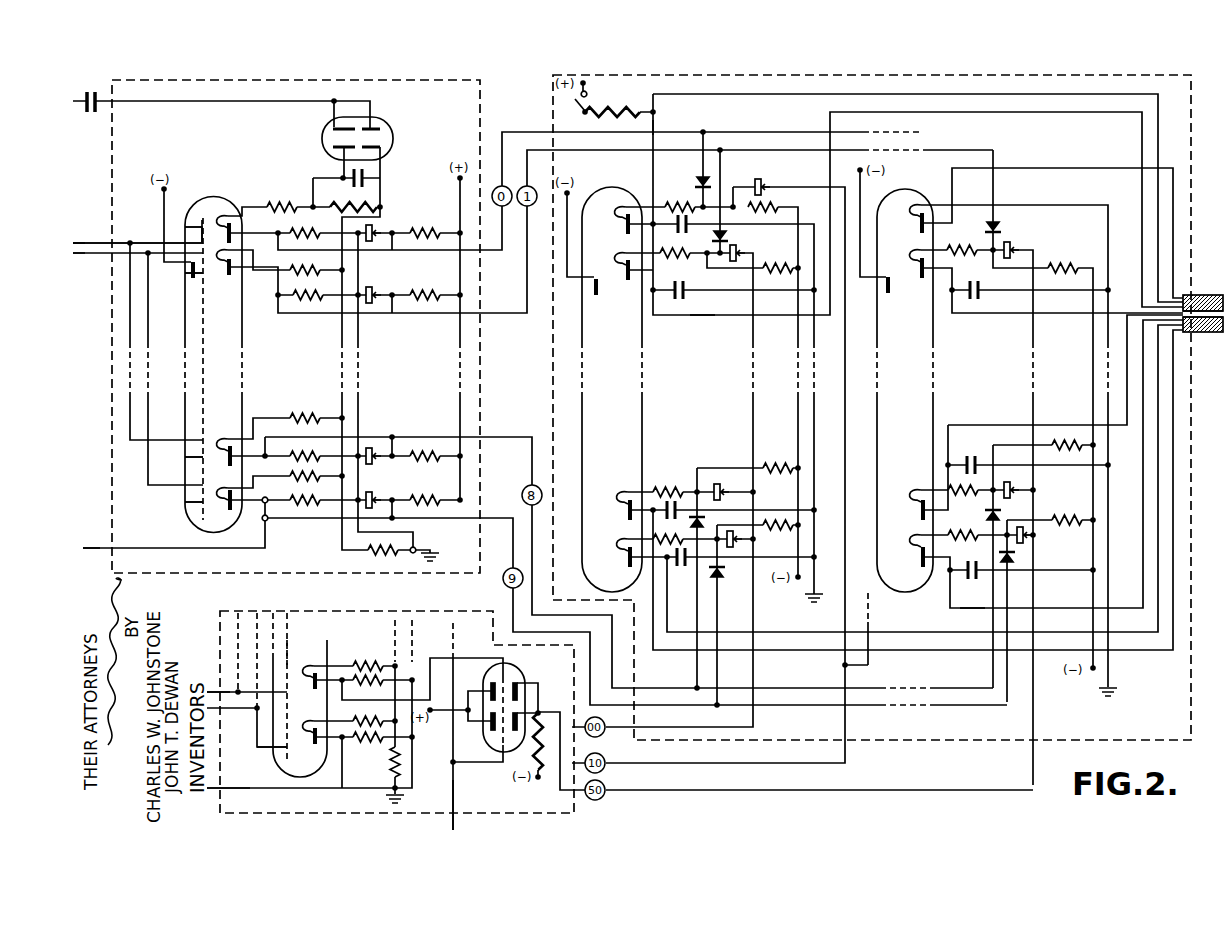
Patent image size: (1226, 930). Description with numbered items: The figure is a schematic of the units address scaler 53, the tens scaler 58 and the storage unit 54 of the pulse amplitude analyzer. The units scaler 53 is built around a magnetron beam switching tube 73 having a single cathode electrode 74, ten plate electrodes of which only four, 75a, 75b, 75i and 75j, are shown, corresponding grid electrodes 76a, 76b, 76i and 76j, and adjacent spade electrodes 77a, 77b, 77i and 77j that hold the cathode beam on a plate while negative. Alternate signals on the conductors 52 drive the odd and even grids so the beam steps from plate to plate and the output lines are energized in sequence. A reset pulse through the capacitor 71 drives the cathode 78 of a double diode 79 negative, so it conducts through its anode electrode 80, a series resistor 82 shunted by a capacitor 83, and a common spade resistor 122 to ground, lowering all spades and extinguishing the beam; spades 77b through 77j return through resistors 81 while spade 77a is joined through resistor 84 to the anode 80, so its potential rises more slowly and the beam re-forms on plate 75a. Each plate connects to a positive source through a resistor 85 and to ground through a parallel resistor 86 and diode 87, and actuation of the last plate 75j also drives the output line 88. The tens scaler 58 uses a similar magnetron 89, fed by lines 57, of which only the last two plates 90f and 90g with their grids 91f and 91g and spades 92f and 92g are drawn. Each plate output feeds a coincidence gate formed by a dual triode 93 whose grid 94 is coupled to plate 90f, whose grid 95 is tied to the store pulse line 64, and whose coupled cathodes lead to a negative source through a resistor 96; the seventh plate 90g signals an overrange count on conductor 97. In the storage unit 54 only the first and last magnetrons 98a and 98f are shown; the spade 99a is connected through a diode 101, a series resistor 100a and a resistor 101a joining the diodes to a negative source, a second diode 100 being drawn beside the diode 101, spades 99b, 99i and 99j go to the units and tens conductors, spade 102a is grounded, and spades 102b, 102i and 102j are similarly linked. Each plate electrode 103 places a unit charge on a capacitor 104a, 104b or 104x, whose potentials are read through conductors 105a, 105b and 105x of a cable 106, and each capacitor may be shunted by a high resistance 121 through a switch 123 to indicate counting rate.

The conductors 52 is at (93, 243).
The units address scaler 53 is at (483, 100).
The storage unit 54 is at (551, 378).
The lines 57 is at (238, 696).
The tens scaler 58 is at (218, 628).
The store pulse line 64 is at (452, 788).
The capacitor 71 is at (89, 92).
The magnetron beam switching tube 73 is at (198, 197).
The cathode electrode 74 is at (191, 281).
The plate electrode 75a is at (236, 214).
The plate electrode 75b is at (225, 262).
The plate electrode 75i is at (228, 440).
The plate electrode 75j is at (227, 500).
The grid electrode 76a is at (185, 229).
The grid electrode 76b is at (200, 276).
The grid electrode 76i is at (203, 457).
The grid electrode 76j is at (203, 502).
The spade electrode 77a is at (226, 215).
The spade electrode 77b is at (227, 277).
The spade electrode 77i is at (227, 447).
The spade electrode 77j is at (222, 508).
The cathode 78 is at (340, 125).
The double diode 79 is at (313, 139).
The anode electrode 80 is at (336, 148).
The resistor 81 is at (300, 272).
The series resistor 82 is at (360, 210).
The capacitor 83 is at (350, 176).
The resistor 84 is at (285, 205).
The resistor 85 is at (424, 230).
The resistor 86 is at (300, 520).
The diode 87 is at (371, 242).
The output line 88 is at (98, 548).
The magnetron 89 is at (266, 769).
The plate electrode 90f is at (313, 690).
The plate electrode 90g is at (320, 744).
The grid electrode 91f is at (287, 662).
The grid electrode 91g is at (285, 738).
The spade electrode 92f is at (303, 666).
The spade electrode 92g is at (304, 733).
The dual triode 93 is at (524, 672).
The grid electrode 94 is at (492, 683).
The grid electrode 95 is at (492, 732).
The resistor 96 is at (543, 745).
The seventh output conductor 97 is at (268, 788).
The magnetron 98a is at (652, 425).
The magnetron 98f is at (944, 399).
The spade 99a is at (622, 210).
The spade 99b is at (614, 257).
The spade 99i is at (615, 500).
The spade 99j is at (615, 548).
The diode 100 is at (693, 180).
The series resistor 100a is at (676, 197).
The diode 101 is at (773, 175).
The resistor 101a is at (768, 214).
The spade 102a is at (910, 215).
The spade 102b is at (910, 272).
The spade 102i is at (910, 493).
The spade 102j is at (910, 546).
The plate electrode 103 is at (626, 222).
The capacitor 104a is at (664, 232).
The capacitor 104b is at (678, 285).
The capacitor 104x is at (965, 580).
The conductor 105a is at (652, 127).
The conductor 105b is at (703, 318).
The conductor 105x is at (972, 608).
The cable 106 is at (1205, 292).
The high resistance 121 is at (612, 108).
The common spade resistor 122 is at (370, 552).
The switch 123 is at (569, 106).